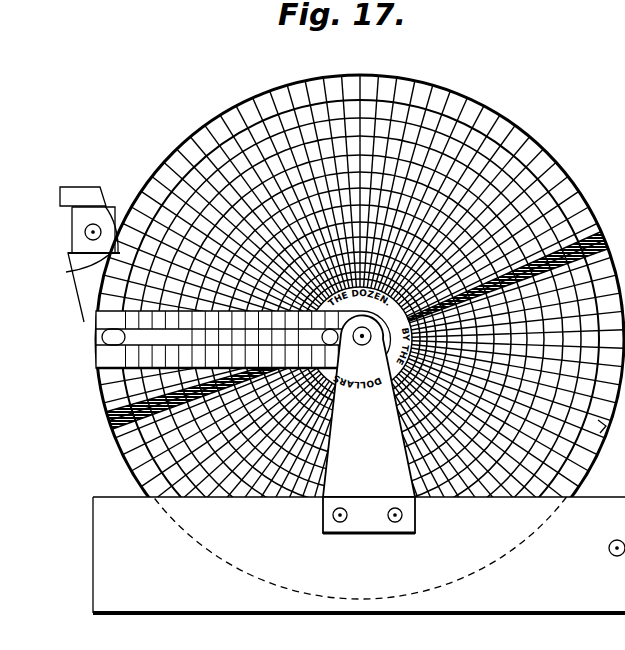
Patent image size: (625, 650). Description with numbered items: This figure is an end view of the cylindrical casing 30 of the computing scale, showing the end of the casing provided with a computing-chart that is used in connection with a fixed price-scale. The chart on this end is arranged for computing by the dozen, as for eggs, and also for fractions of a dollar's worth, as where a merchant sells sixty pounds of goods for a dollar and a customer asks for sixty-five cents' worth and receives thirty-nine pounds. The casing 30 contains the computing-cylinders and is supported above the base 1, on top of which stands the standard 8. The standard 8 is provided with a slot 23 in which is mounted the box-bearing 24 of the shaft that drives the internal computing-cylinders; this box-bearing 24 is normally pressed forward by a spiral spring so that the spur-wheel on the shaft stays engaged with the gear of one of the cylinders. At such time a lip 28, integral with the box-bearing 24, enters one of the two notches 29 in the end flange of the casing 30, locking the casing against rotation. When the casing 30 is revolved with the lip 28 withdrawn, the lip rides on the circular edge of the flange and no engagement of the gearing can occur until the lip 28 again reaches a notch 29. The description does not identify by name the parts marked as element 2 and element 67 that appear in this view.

The base 1 is at (538, 556).
The index mark 2 is at (601, 429).
The standard 8 is at (80, 295).
The slot 23 is at (68, 205).
The box-bearing 24 is at (112, 215).
The lip 28 is at (88, 249).
The notches 29 is at (100, 268).
The cylindrical casing 30 is at (536, 157).
The slide arm 67 is at (112, 363).